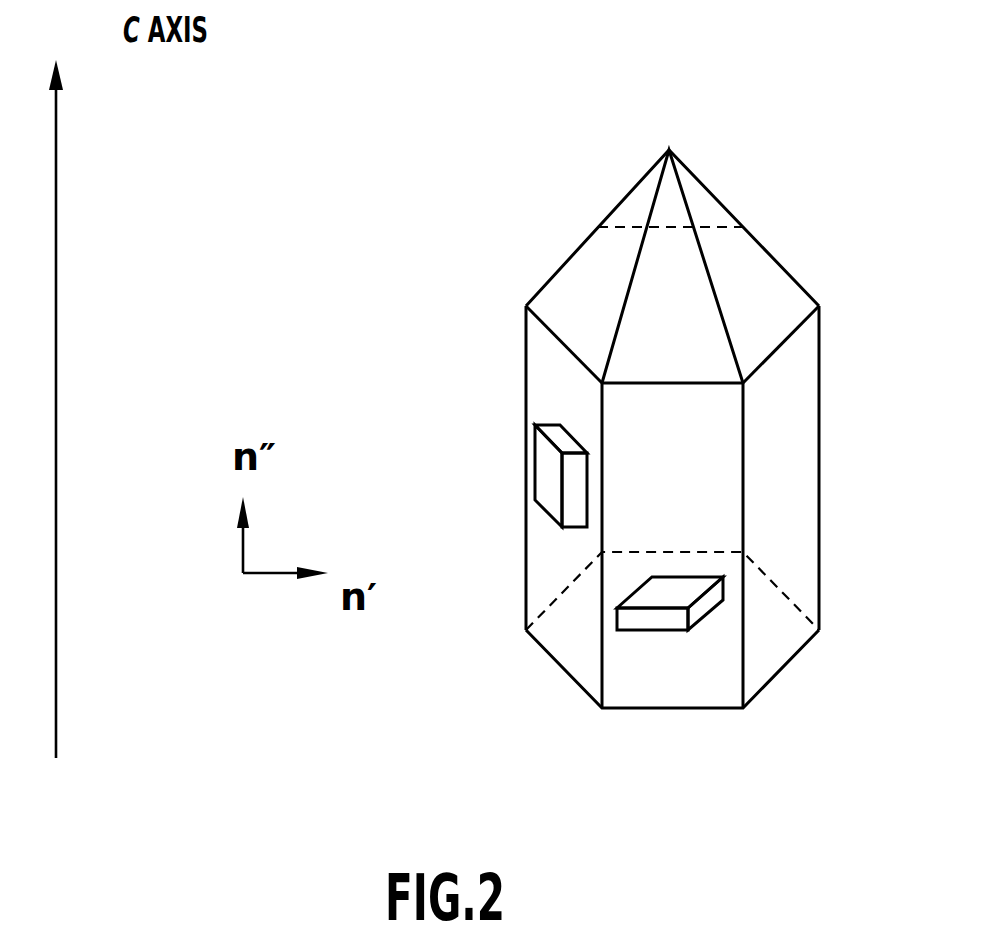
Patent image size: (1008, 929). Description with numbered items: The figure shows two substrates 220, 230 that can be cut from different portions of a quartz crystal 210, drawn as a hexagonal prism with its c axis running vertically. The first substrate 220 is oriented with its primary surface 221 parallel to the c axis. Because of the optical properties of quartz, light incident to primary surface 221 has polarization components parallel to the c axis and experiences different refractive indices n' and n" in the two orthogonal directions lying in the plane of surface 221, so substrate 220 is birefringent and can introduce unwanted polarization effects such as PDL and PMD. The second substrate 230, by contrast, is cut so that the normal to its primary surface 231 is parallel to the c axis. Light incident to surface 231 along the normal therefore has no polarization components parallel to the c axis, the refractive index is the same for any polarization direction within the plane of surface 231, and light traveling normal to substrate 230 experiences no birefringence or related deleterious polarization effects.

The quartz crystal 210 is at (820, 460).
The substrate 220 is at (552, 430).
The primary surface 221 is at (553, 502).
The substrate 230 is at (703, 608).
The primary surface 231 is at (663, 600).